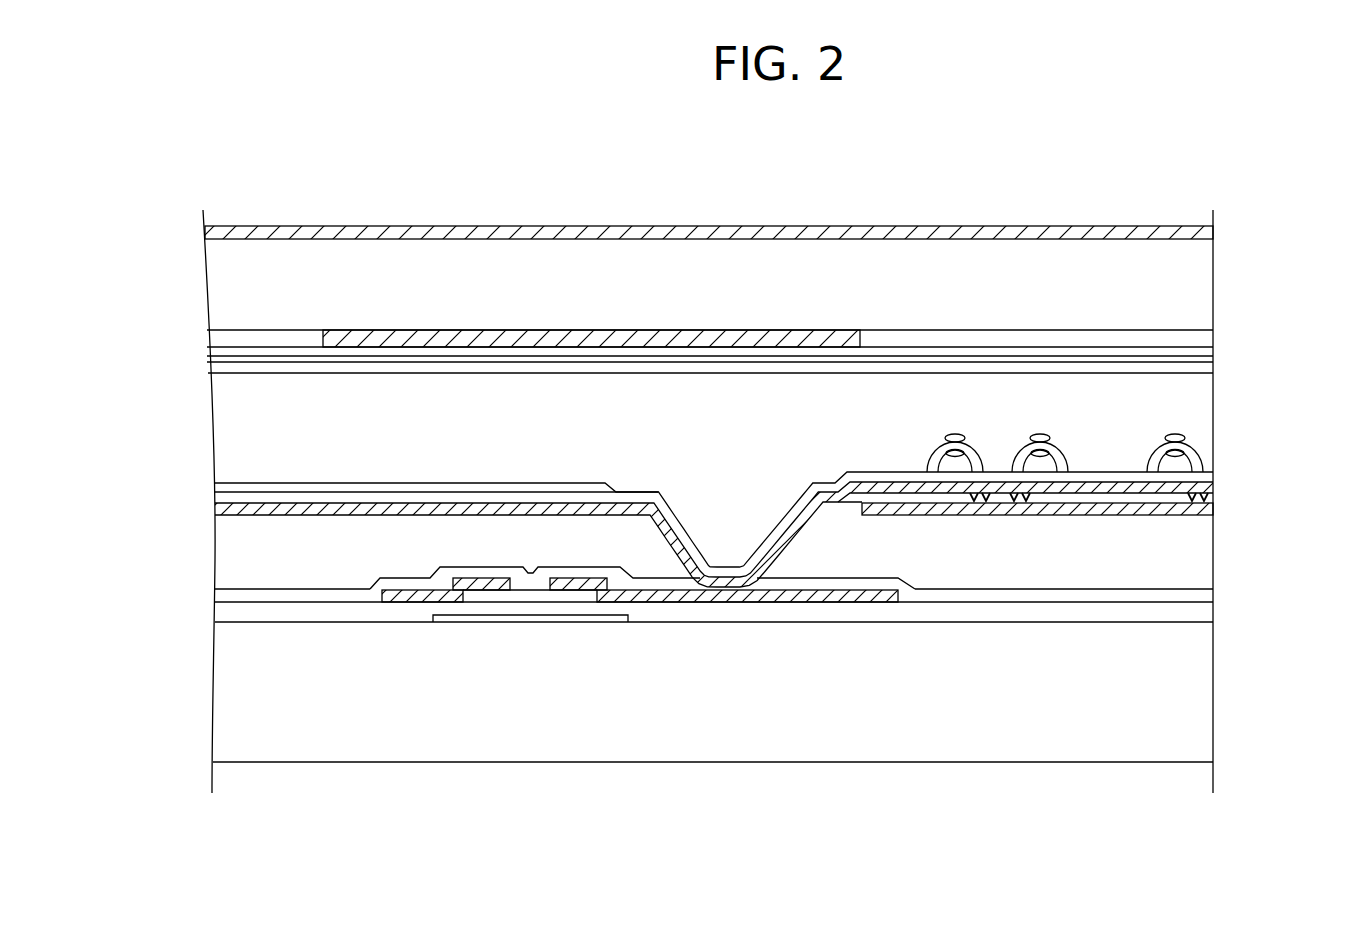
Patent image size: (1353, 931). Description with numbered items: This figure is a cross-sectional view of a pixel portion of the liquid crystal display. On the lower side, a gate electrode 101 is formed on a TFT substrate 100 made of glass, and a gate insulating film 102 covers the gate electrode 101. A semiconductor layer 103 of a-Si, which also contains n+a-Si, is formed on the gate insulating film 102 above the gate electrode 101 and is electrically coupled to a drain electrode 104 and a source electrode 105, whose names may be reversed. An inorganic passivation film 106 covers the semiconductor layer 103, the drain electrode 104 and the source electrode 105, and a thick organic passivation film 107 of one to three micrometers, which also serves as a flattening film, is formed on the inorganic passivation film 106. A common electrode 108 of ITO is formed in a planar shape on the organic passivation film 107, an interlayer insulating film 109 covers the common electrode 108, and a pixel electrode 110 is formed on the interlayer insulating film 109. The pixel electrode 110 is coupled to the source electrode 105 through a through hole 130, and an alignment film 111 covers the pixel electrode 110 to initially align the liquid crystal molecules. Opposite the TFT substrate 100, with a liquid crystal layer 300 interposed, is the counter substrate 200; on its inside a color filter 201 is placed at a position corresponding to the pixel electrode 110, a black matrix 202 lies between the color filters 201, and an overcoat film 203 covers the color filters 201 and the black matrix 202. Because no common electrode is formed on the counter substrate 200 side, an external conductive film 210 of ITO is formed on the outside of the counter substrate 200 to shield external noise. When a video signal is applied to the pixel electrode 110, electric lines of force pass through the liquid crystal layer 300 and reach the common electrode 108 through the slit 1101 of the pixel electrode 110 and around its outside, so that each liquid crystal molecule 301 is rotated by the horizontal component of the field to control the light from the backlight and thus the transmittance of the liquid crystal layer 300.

The TFT substrate 100 is at (1200, 690).
The gate electrode 101 is at (540, 620).
The gate insulating film 102 is at (1213, 615).
The semiconductor layer 103 is at (484, 600).
The drain electrode 104 is at (408, 600).
The source electrode 105 is at (660, 600).
The inorganic passivation film 106 is at (1213, 593).
The organic passivation film 107 is at (1205, 553).
The common electrode 108 is at (215, 512).
The interlayer insulating film 109 is at (1216, 493).
The pixel electrode 110 is at (1097, 492).
The alignment film 111 is at (1216, 480).
The through hole 130 is at (731, 497).
The counter substrate 200 is at (1205, 270).
The color filter 201 is at (900, 338).
The black matrix 202 is at (716, 330).
The overcoat film 203 is at (1210, 353).
The external conductive film 210 is at (1003, 226).
The liquid crystal layer 300 is at (1205, 400).
The liquid crystal molecule 301 is at (1185, 437).
The slit of pixel electrode 1101 is at (997, 472).